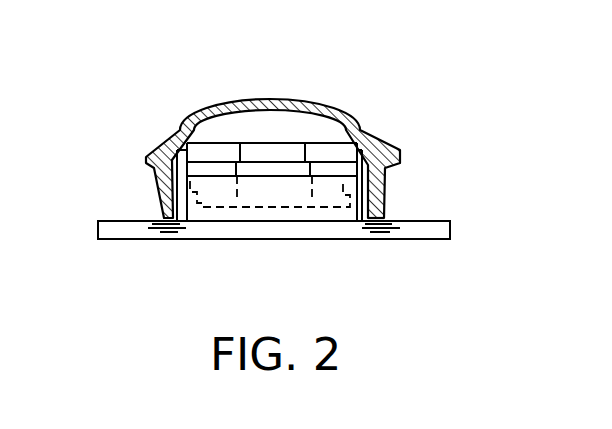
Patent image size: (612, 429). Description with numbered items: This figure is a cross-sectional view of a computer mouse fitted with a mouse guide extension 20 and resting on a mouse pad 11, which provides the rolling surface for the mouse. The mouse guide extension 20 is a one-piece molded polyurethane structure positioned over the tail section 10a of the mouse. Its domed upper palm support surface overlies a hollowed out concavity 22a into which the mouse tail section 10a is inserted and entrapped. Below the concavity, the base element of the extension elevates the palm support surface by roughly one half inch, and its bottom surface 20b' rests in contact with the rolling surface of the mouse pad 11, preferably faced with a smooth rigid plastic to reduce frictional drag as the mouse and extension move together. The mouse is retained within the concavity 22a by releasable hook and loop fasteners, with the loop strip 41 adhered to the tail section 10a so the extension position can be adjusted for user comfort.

The mouse pad 11 is at (118, 231).
The mouse guide extension 20 is at (190, 110).
The bottom surface 20b' is at (437, 177).
The tail section 10a is at (215, 198).
The loop strip 41 is at (297, 190).
The hollowed out concavity 22a is at (373, 213).